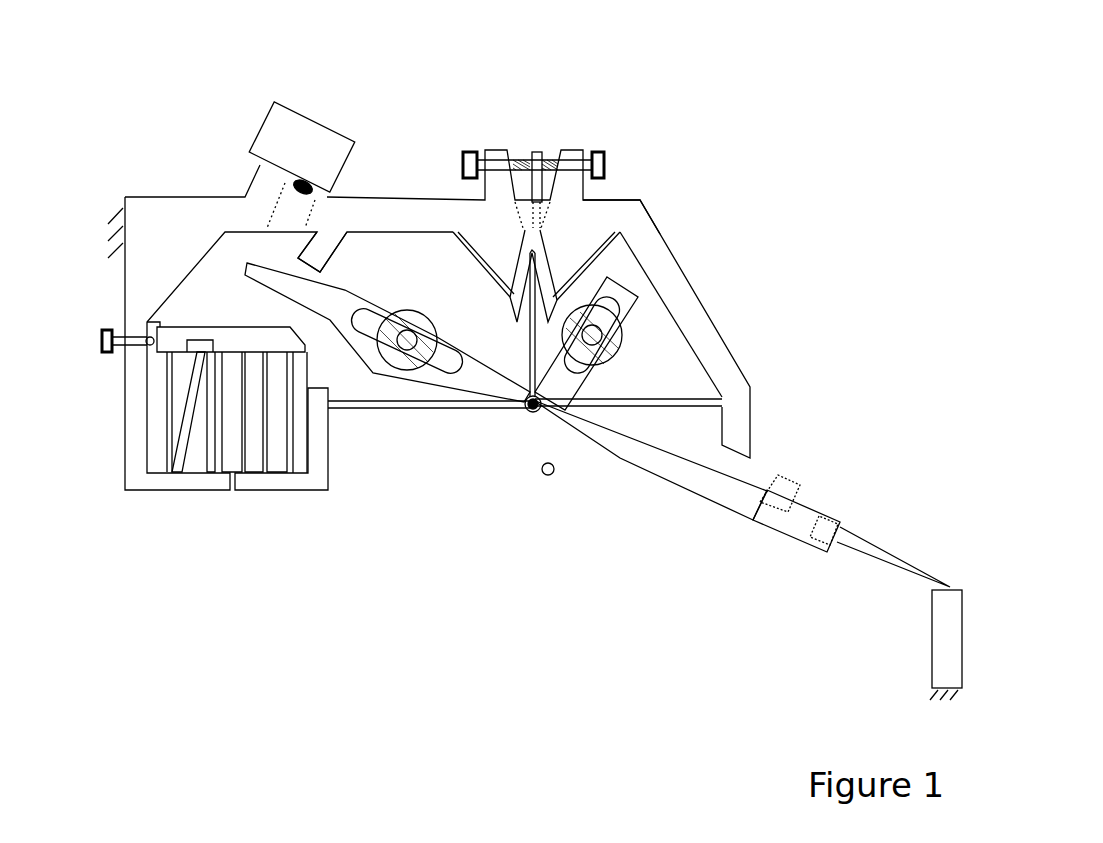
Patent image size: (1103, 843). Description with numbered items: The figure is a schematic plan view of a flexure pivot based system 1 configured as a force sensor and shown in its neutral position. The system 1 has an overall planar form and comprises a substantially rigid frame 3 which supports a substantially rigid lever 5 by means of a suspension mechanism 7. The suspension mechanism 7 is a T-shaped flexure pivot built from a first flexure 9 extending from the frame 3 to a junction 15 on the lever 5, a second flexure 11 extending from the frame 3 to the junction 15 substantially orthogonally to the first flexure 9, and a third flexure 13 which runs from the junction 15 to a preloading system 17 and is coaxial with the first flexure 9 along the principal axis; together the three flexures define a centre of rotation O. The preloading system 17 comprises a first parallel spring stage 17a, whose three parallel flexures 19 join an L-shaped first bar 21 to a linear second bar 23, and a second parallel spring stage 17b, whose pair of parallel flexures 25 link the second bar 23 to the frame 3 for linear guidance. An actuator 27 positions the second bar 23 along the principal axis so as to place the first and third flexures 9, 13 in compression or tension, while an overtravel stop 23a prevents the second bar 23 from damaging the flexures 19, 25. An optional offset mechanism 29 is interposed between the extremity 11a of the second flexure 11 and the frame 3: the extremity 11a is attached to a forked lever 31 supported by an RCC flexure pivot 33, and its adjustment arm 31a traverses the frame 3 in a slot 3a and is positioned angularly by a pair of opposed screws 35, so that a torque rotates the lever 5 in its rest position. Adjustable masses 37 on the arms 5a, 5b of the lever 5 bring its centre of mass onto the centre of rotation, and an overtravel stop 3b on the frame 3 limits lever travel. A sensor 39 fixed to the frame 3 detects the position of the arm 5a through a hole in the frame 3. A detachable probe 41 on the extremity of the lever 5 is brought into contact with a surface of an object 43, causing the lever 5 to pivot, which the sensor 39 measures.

The flexure pivot based system 1 is at (792, 120).
The frame 3 is at (702, 327).
The slot 3a is at (548, 211).
The overtravel stop 3b is at (320, 252).
The lever 5 is at (677, 475).
The arm of the lever 5a is at (340, 300).
The arm of the lever 5b is at (635, 310).
The suspension mechanism 7 is at (452, 457).
The first flexure 9 is at (676, 399).
The second flexure 11 is at (530, 368).
The extremity of the second flexure 11a is at (532, 254).
The third flexure 13 is at (418, 410).
The junction 15 is at (530, 410).
The preloading system 17 is at (152, 575).
The first parallel spring stage 17a is at (262, 504).
The second parallel spring stage 17b is at (144, 519).
The parallel flexures 19 is at (268, 447).
The first bar 21 is at (318, 470).
The second bar 23 is at (148, 322).
The overtravel stop 23a is at (213, 350).
The parallel flexures 25 is at (162, 463).
The actuator 27 is at (104, 354).
The offset mechanism 29 is at (622, 125).
The forked lever 31 is at (507, 307).
The adjustment arm 31a is at (541, 157).
The RCC flexure pivot 33 is at (478, 262).
The opposed screws 35 is at (598, 153).
The masses 37 is at (412, 320).
The sensor 39 is at (300, 125).
The detachable probe 41 is at (850, 545).
The object 43 is at (935, 672).